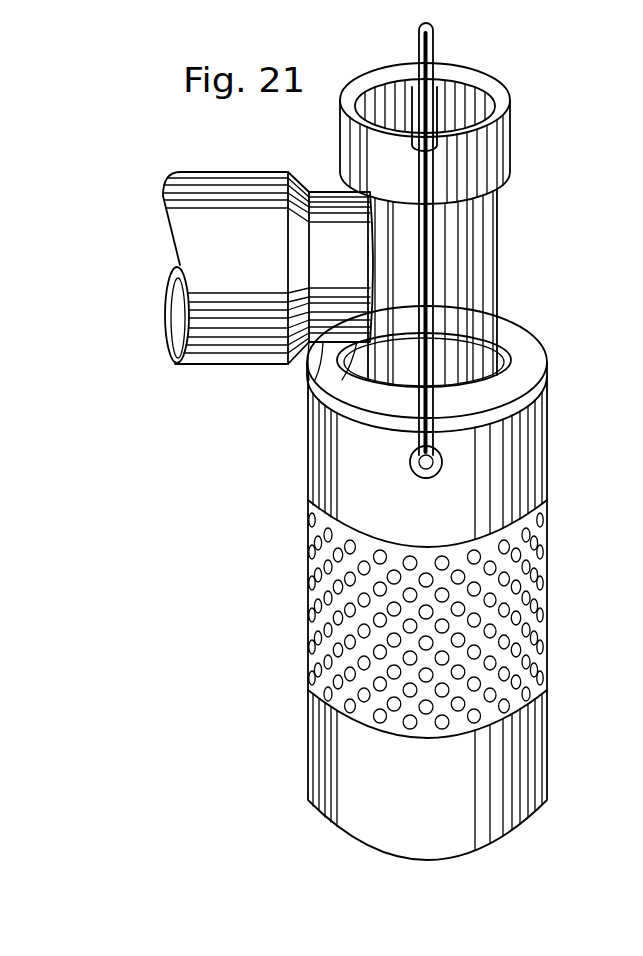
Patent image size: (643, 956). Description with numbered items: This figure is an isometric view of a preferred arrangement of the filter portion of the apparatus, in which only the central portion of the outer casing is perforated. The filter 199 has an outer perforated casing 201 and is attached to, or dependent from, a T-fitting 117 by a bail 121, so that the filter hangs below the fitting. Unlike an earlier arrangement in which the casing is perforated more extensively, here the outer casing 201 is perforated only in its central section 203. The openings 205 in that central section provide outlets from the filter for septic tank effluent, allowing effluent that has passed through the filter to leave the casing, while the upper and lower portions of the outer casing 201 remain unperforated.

The T-fitting 117 is at (472, 252).
The bail 121 is at (423, 292).
The filter 199 is at (405, 583).
The outer perforated casing 201 is at (318, 500).
The central section 203 is at (425, 619).
The openings 205 is at (325, 700).